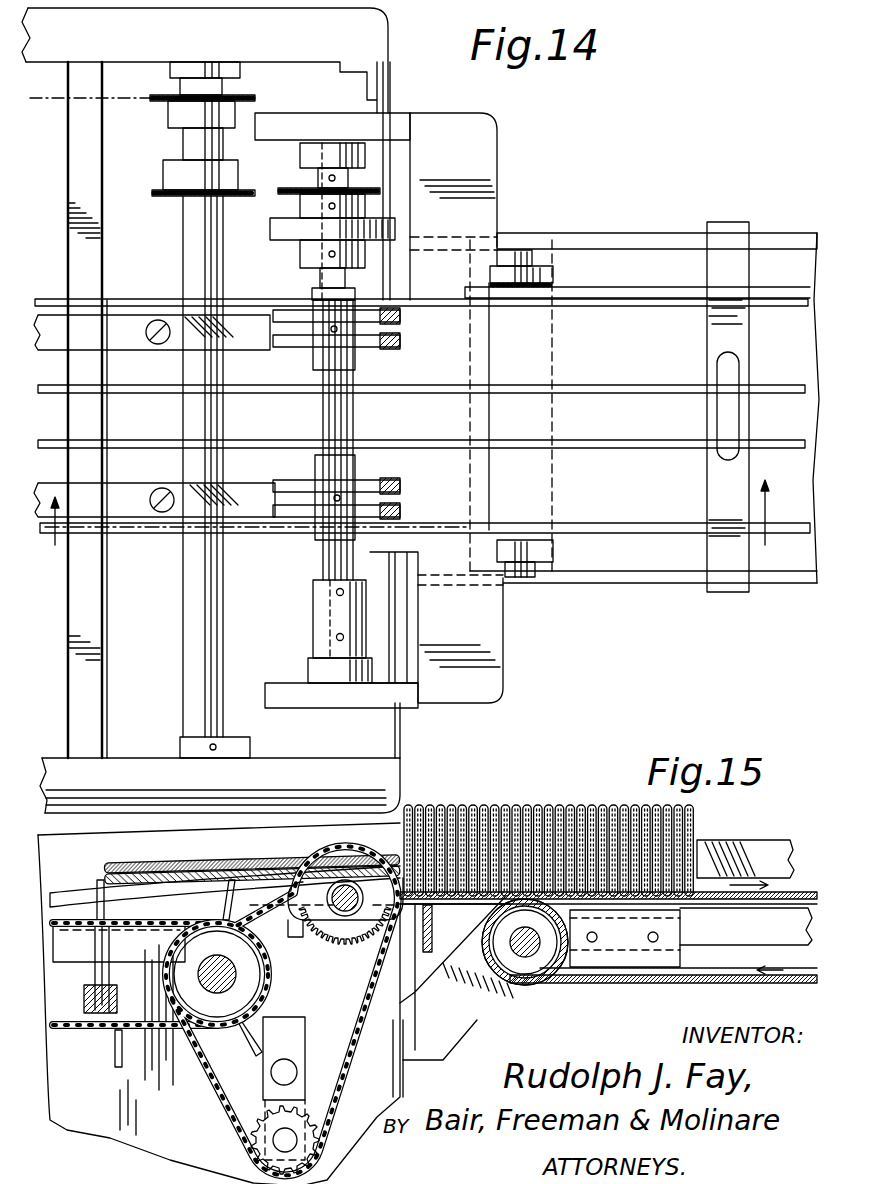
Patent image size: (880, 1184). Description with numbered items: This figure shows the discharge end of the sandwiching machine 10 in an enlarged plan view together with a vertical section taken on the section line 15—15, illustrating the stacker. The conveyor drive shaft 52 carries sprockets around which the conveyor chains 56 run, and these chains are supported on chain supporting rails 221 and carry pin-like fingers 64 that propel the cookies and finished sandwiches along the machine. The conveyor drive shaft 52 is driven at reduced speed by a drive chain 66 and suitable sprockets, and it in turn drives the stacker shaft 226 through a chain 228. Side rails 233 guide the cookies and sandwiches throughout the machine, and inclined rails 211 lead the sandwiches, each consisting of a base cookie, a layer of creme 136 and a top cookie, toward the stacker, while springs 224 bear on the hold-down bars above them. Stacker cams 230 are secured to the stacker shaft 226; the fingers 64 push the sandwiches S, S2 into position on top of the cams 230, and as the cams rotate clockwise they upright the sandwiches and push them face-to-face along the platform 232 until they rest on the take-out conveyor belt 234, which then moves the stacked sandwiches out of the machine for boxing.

In FIG. 14, the frame housing 10 is at (375, 37).
In FIG. 15, the frame housing 10 is at (175, 1135).
In FIG. 14, the section line 15— 15 is at (411, 513).
In FIG. 14, the conveyor drive shaft 52 is at (198, 612).
In FIG. 15, the conveyor drive shaft 52 is at (220, 957).
In FIG. 15, the conveyor chains 56 is at (90, 1030).
In FIG. 15, the pin-like fingers 64 is at (104, 904).
In FIG. 14, the drive chain 66 is at (150, 98).
In FIG. 15, the creme 136 is at (226, 868).
In FIG. 14, the inclined rails 211 is at (124, 345).
In FIG. 15, the inclined rails 211 is at (137, 878).
In FIG. 15, the chain supporting rails 221 is at (72, 953).
In FIG. 14, the springs 224 is at (368, 186).
In FIG. 15, the springs 224 is at (332, 946).
In FIG. 14, the stacker shaft 226 is at (327, 411).
In FIG. 15, the stacker shaft 226 is at (333, 920).
In FIG. 14, the chain 228 is at (278, 193).
In FIG. 15, the chain 228 is at (215, 1093).
In FIG. 14, the stacker cams 230 is at (400, 340).
In FIG. 15, the stacker cams 230 is at (395, 880).
In FIG. 14, the platform 232 is at (485, 480).
In FIG. 15, the platform 232 is at (478, 908).
In FIG. 14, the side rails 233 is at (122, 299).
In FIG. 15, the side rails 233 is at (752, 845).
In FIG. 14, the take-out conveyor belt 234 is at (645, 505).
In FIG. 15, the take-out conveyor belt 234 is at (750, 912).
In FIG. 15, the sandwiches S is at (110, 858).
In FIG. 15, the coiled spring S2 is at (522, 803).